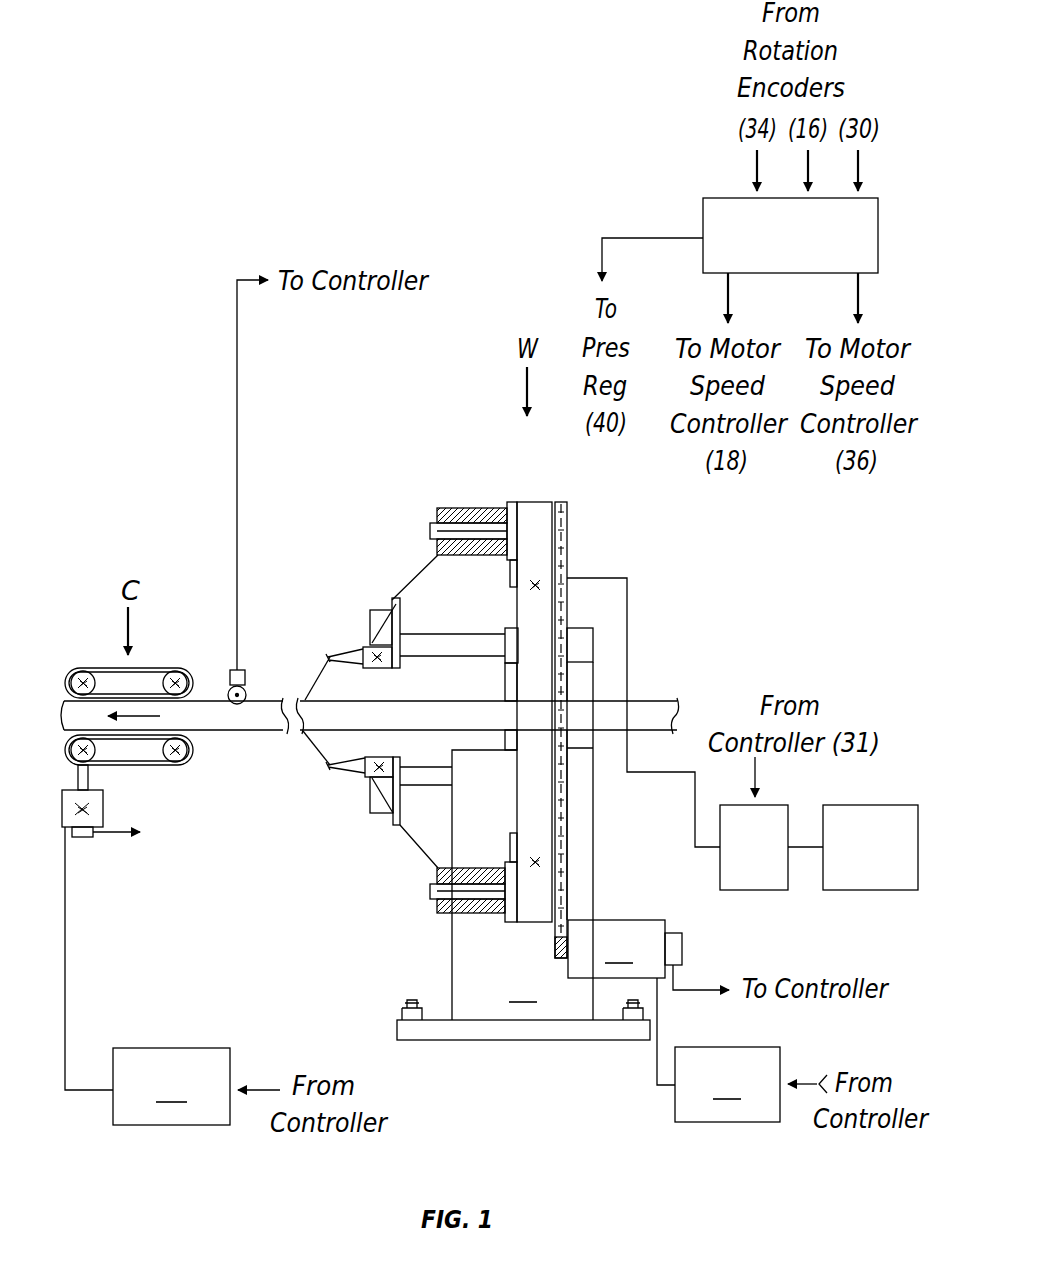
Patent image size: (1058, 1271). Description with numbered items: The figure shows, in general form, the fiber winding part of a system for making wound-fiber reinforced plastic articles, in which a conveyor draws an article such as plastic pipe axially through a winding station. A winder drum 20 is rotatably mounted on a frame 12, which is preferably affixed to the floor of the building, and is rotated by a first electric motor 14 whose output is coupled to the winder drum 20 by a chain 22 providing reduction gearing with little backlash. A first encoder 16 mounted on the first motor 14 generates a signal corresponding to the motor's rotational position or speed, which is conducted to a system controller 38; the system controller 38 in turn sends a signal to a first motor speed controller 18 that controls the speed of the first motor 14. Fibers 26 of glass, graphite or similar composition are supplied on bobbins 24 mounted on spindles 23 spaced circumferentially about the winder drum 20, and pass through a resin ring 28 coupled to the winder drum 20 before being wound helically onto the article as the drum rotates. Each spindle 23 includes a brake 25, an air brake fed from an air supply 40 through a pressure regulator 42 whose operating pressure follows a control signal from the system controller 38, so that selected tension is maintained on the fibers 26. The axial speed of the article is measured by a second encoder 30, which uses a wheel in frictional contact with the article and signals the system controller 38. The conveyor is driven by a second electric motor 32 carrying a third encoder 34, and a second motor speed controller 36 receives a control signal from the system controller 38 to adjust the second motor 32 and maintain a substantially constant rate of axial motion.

The frame 12 is at (523, 834).
The first electric motor 14 is at (616, 949).
The first encoder 16 is at (684, 940).
The first motor speed controller 18 is at (742, 1050).
The winder drum 20 is at (538, 502).
The chain 22 is at (567, 558).
The spindles 23 is at (432, 522).
The bobbins 24 is at (462, 508).
The brake 25 is at (513, 502).
The fibers 26 is at (318, 678).
The resin ring 28 is at (400, 625).
The second encoder 30 is at (232, 668).
The second electric motor 32 is at (105, 807).
The third encoder 34 is at (85, 838).
The second motor speed controller 36 is at (172, 976).
The system controller 38 is at (723, 198).
The air supply 40 is at (873, 892).
The pressure regulator 42 is at (755, 892).